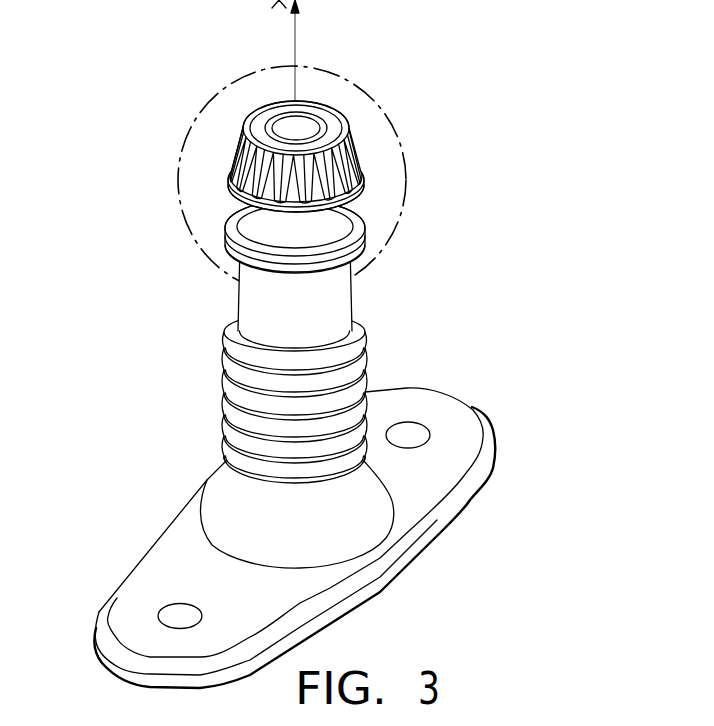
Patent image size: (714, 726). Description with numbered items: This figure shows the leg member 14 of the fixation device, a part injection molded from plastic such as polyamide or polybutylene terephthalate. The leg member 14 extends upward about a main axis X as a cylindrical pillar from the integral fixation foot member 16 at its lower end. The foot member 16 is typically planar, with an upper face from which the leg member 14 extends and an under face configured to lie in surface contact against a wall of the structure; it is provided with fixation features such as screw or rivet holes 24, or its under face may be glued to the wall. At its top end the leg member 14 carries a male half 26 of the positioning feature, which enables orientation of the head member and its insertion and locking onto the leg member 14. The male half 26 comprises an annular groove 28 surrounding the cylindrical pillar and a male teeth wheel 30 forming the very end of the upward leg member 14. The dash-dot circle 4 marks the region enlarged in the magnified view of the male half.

The detail view indicator circle 4 is at (389, 99).
The leg member 14 is at (382, 283).
The fixation foot member 16 is at (463, 435).
The screw or rivet holes 24 is at (170, 611).
The male half of the positioning feature 26 is at (200, 182).
The annular groove 28 is at (252, 229).
The male teeth wheel 30 is at (238, 128).